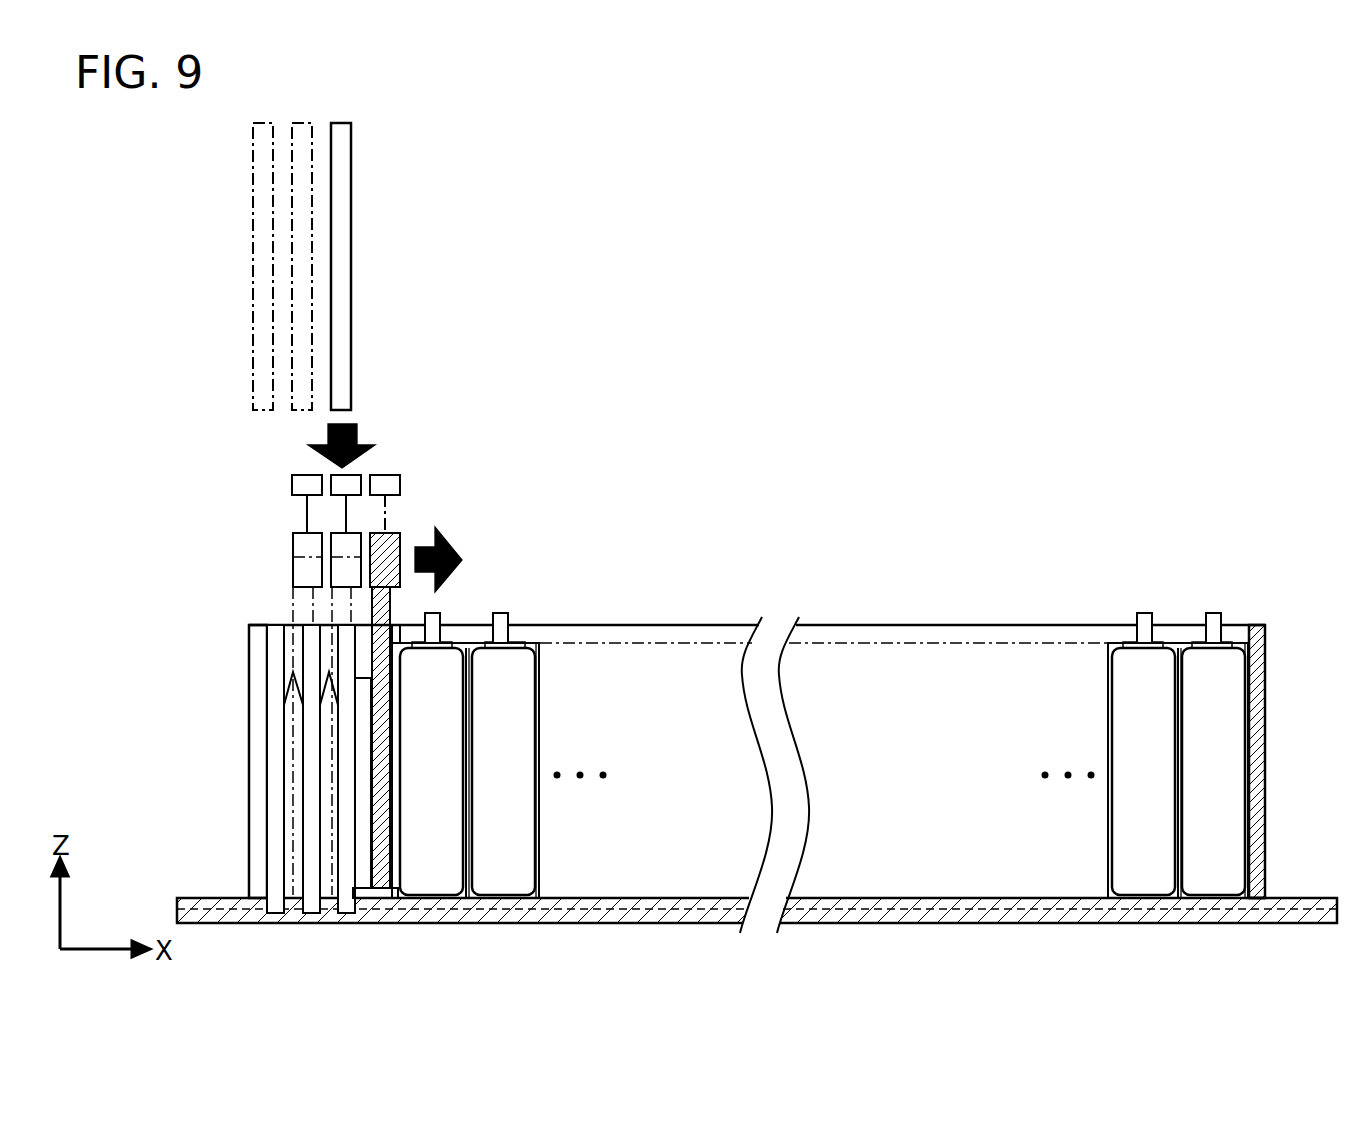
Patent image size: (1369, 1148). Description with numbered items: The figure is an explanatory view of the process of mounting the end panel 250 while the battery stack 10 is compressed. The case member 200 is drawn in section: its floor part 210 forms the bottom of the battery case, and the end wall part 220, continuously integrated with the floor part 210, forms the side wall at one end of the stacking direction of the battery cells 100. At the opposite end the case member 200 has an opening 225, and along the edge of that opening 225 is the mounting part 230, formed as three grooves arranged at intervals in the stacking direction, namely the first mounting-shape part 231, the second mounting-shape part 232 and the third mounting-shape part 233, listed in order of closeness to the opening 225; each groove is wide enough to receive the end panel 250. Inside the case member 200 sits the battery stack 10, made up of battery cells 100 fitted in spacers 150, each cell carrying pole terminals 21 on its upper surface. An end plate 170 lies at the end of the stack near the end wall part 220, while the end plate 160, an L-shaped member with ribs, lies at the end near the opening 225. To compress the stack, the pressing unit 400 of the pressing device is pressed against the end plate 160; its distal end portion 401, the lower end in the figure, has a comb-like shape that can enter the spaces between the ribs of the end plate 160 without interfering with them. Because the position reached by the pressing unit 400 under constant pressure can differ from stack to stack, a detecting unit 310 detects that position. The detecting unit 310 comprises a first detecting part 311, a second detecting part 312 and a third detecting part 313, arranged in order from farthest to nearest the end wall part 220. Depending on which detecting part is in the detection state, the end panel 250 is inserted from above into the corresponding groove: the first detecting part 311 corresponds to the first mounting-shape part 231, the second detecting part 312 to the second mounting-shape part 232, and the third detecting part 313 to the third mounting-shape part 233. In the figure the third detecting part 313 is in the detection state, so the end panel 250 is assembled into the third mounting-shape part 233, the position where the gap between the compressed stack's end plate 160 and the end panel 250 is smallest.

The battery stack 10 is at (473, 747).
The electrode terminal 21 is at (1178, 633).
The battery cell 100 is at (433, 875).
The spacer 150 is at (467, 892).
The end plate 160 is at (392, 892).
The end plate 170 is at (1263, 895).
The case member 200 is at (754, 754).
The floor part 210 is at (1120, 915).
The end wall part 220 is at (1258, 720).
The opening 225 is at (255, 740).
The mounting part 230 is at (263, 769).
The first mounting-shape part 231 is at (273, 888).
The second mounting-shape part 232 is at (307, 888).
The third mounting-shape part 233 is at (346, 888).
The end panel 250 is at (338, 215).
The detecting unit 310 is at (248, 502).
The first detecting part 311 is at (300, 480).
The second detecting part 312 is at (342, 492).
The third detecting part 313 is at (375, 492).
The pressing unit 400 is at (395, 713).
The distal end portion 401 is at (378, 875).